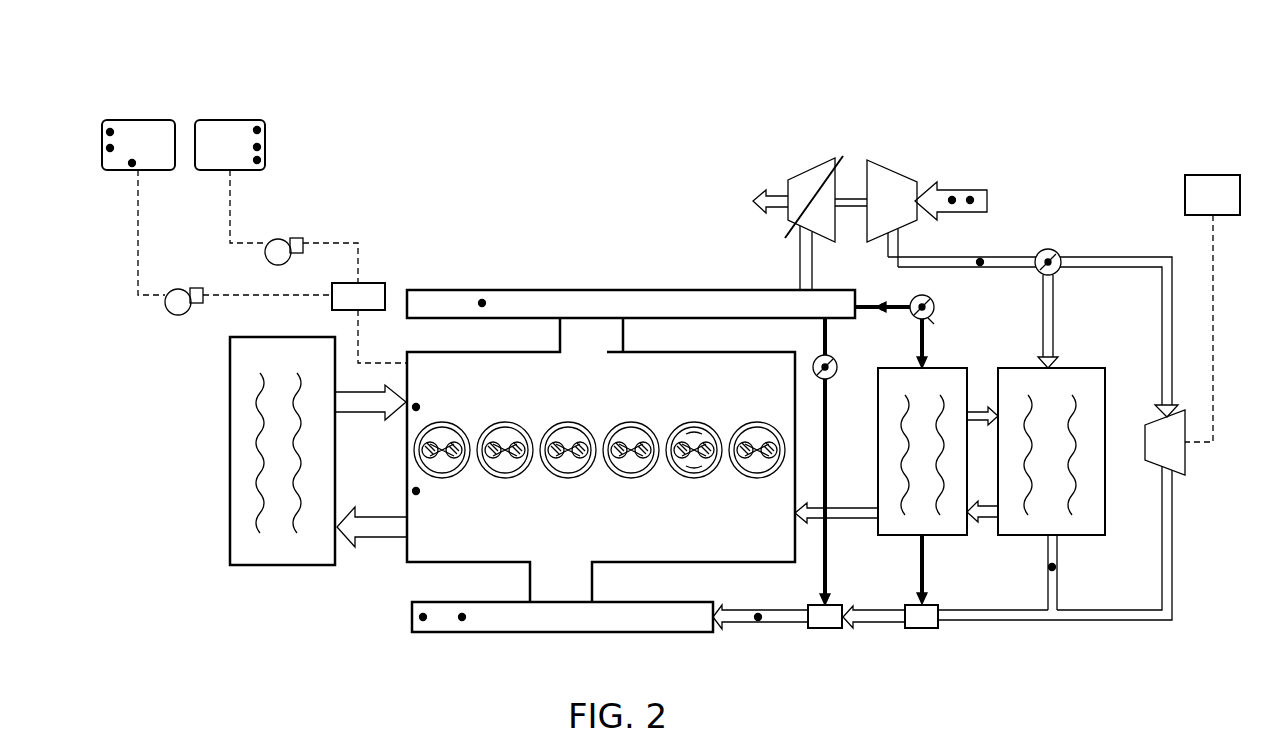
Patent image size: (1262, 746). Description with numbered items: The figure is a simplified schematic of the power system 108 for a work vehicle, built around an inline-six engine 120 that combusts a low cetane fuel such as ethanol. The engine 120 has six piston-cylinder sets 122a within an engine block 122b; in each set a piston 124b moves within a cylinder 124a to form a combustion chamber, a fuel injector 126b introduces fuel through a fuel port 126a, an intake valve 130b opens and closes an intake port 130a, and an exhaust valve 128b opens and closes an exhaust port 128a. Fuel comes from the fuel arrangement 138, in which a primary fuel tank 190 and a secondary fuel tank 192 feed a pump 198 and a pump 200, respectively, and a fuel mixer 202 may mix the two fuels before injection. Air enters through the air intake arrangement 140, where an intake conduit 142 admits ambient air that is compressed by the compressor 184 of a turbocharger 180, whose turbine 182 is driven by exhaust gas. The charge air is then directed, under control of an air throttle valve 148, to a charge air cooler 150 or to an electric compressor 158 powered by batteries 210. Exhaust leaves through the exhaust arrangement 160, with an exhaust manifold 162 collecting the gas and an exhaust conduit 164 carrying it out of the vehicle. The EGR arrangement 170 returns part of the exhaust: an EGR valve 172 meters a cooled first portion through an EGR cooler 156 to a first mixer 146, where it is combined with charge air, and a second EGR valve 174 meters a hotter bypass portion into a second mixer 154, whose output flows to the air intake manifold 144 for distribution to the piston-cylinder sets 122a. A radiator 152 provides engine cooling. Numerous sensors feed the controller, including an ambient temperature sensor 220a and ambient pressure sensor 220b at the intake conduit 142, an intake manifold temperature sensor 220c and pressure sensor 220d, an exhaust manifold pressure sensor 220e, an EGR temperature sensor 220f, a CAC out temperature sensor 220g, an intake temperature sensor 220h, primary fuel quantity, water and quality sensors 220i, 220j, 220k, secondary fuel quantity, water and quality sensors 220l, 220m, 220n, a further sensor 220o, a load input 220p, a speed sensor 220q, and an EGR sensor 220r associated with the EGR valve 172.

The power system 108 is at (606, 150).
The engine 120 is at (729, 573).
The piston-cylinder sets 122a is at (714, 399).
The engine block 122b is at (680, 509).
The cylinder 124a is at (692, 481).
The piston 124b is at (700, 478).
The fuel port 126a is at (686, 466).
The fuel injector 126b is at (692, 440).
The exhaust port 128a is at (684, 445).
The exhaust valve 128b is at (690, 430).
The intake port 130a is at (706, 468).
The intake valve 130b is at (708, 443).
The fuel arrangement 138 is at (300, 177).
The air intake arrangement 140 is at (1018, 218).
The intake conduit 142 is at (987, 190).
The air intake manifold 144 is at (560, 634).
The first mixer 146 is at (923, 630).
The air throttle valve 148 is at (1056, 250).
The charge air cooler 150 is at (1080, 367).
The radiator 152 is at (283, 567).
The second mixer 154 is at (826, 630).
The EGR cooler 156 is at (946, 367).
The electric compressor 158 is at (1185, 465).
The exhaust arrangement 160 is at (608, 220).
The exhaust manifold 162 is at (715, 320).
The exhaust conduit 164 is at (778, 215).
The EGR arrangement 170 is at (812, 352).
The EGR valve 172 is at (934, 302).
The second EGR valve 174 is at (835, 358).
The turbocharger 180 is at (803, 152).
The turbine 182 is at (822, 243).
The compressor 184 is at (897, 168).
The primary fuel tank 190 is at (140, 120).
The secondary fuel tank 192 is at (233, 120).
The pump 198 is at (188, 290).
The pump 200 is at (290, 240).
The fuel mixer 202 is at (378, 283).
The batteries 210 is at (1212, 175).
The ambient temperature sensor 220a is at (952, 196).
The ambient pressure sensor 220b is at (971, 196).
The intake manifold temperature sensor 220c is at (462, 613).
The intake manifold pressure sensor 220d is at (423, 622).
The exhaust manifold pressure sensor 220e is at (483, 299).
The EGR temperature sensor 220f is at (885, 300).
The CAC out temperature sensor 220g is at (1056, 567).
The intake temperature sensor 220h is at (979, 258).
The primary fuel quantity sensor 220i is at (110, 128).
The primary fuel water sensor 220j is at (112, 145).
The primary fuel quality sensor 220k is at (135, 165).
The secondary fuel quantity sensor 220l is at (259, 128).
The secondary fuel water sensor 220m is at (259, 146).
The secondary fuel quality sensor 220n is at (259, 160).
The sensor 220o is at (758, 621).
The load input 220p is at (418, 404).
The speed sensor 220q is at (413, 491).
The EGR sensor 220r is at (933, 316).